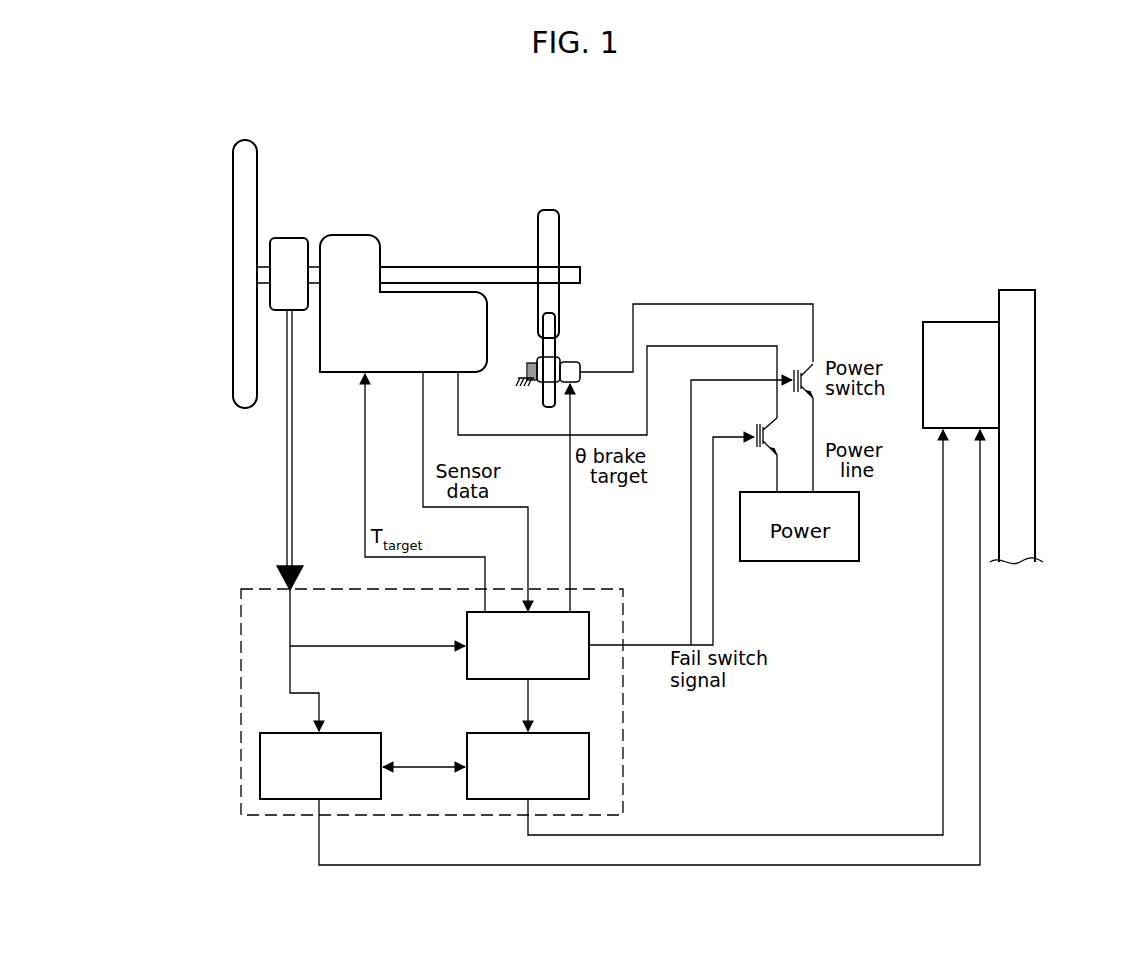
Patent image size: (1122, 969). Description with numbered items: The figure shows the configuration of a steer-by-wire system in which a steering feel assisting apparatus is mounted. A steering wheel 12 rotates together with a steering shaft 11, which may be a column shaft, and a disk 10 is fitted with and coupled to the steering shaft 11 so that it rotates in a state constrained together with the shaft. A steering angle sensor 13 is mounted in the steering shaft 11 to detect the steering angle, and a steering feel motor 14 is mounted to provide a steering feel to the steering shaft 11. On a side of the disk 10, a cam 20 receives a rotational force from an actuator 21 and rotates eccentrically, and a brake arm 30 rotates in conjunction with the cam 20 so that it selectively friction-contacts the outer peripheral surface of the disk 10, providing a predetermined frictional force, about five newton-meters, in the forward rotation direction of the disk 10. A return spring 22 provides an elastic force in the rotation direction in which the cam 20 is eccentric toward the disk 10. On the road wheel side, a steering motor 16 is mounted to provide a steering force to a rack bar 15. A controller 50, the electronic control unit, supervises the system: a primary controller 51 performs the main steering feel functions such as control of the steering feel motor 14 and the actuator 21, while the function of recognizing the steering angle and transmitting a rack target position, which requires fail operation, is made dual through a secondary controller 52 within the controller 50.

The disk 10 is at (549, 212).
The steering shaft 11 is at (427, 267).
The steering wheel 12 is at (233, 272).
The steering angle sensor 13 is at (288, 237).
The steering feel motor 14 is at (350, 235).
The rack bar 15 is at (1025, 383).
The steering motor 16 is at (953, 330).
The cam 20 is at (524, 387).
The actuator 21 is at (583, 380).
The return spring 22 is at (531, 362).
The brake arm 30 is at (556, 342).
The controller 50 is at (241, 647).
The primary controller 51 is at (590, 673).
The secondary controller 52 is at (260, 767).